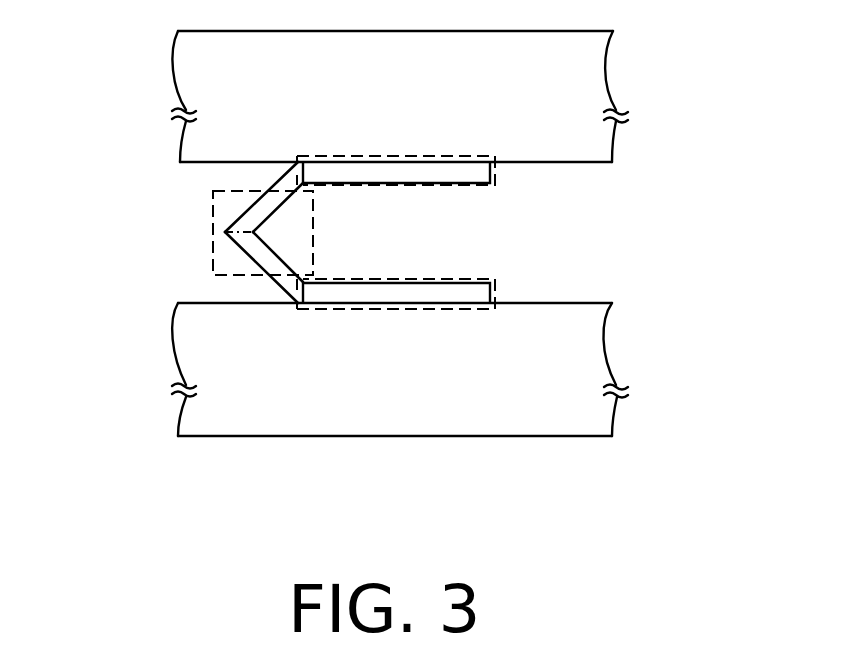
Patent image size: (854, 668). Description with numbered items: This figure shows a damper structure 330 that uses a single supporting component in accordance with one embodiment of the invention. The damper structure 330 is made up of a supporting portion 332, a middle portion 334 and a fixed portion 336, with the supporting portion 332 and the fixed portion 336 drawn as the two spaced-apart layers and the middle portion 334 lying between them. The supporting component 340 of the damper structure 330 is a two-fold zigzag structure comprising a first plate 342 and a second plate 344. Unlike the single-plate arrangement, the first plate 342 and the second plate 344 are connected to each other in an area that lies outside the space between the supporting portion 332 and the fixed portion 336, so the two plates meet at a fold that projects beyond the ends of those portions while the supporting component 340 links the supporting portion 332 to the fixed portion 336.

The damper structure 330 is at (559, 226).
The supporting portion 332 is at (497, 178).
The middle portion 334 is at (315, 247).
The fixed portion 336 is at (497, 288).
The supporting component 340 is at (159, 232).
The first plate 342 is at (258, 212).
The second plate 344 is at (257, 248).